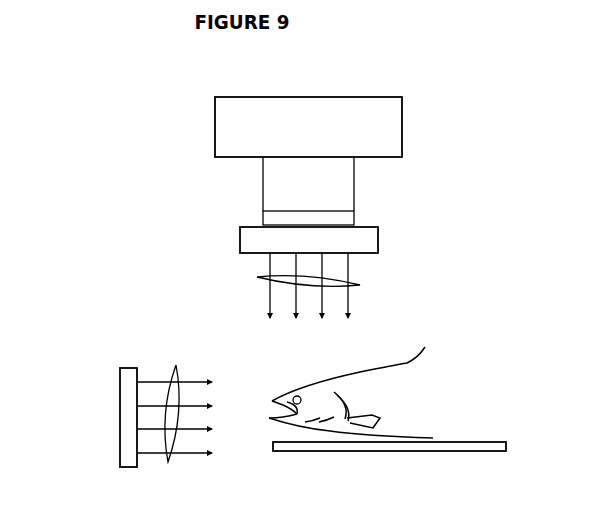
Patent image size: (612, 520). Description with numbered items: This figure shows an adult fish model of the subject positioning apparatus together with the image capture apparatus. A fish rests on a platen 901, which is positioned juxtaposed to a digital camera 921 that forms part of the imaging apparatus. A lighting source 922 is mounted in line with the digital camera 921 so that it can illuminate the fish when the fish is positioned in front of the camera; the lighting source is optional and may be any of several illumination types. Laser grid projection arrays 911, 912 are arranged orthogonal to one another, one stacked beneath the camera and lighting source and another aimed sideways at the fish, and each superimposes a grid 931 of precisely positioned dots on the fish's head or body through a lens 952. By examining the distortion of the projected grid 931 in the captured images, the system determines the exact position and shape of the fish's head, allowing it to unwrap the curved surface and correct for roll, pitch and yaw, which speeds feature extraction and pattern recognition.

The platen 901 is at (413, 432).
The laser grid projection array 911 is at (257, 204).
The laser grid projection array 912 is at (82, 415).
The digital camera 921 is at (350, 127).
The lighting source 922 is at (353, 233).
The grid 931 is at (258, 278).
The lens 952 is at (176, 370).